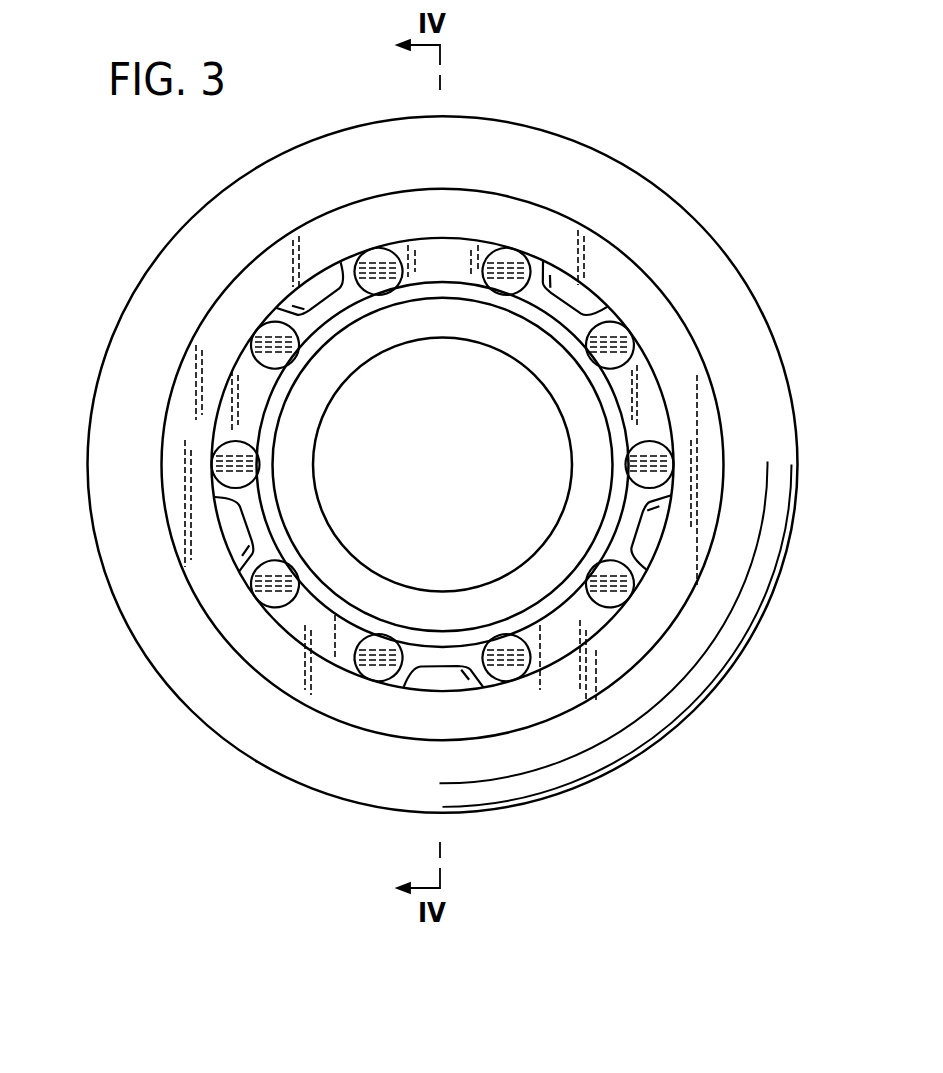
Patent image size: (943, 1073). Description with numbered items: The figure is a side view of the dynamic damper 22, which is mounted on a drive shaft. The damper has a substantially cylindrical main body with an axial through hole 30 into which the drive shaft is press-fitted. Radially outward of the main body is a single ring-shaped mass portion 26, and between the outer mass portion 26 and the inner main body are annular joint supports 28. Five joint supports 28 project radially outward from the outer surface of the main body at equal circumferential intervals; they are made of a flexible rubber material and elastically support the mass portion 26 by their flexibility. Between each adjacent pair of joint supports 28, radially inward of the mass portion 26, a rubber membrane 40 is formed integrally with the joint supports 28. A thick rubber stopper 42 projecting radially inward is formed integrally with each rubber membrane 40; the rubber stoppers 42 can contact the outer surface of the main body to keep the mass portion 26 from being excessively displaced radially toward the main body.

The dynamic damper 22 is at (754, 111).
The mass portion 26 is at (556, 166).
The joint supports 28 is at (450, 240).
The through hole 30 is at (325, 513).
The rubber membrane 40 is at (378, 270).
The rubber stopper 42 is at (315, 295).